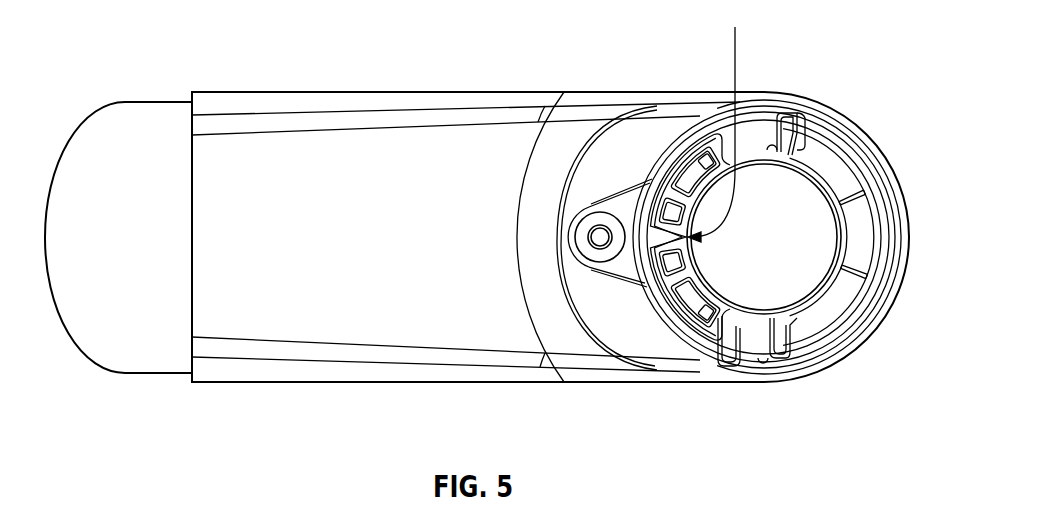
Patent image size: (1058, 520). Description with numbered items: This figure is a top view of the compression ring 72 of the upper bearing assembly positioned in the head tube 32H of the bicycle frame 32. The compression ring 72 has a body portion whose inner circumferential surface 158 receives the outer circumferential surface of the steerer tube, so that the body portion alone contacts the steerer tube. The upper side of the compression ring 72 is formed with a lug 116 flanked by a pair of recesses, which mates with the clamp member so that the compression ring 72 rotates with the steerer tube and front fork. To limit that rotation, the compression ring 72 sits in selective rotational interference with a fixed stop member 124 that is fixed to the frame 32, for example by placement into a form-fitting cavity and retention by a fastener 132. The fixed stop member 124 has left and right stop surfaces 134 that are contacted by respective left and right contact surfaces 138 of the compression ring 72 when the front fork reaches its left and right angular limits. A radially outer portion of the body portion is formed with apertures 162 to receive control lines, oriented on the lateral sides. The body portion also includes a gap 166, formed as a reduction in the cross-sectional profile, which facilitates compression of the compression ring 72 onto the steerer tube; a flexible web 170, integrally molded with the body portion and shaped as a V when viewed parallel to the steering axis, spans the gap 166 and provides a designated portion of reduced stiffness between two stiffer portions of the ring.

The frame 32 is at (277, 145).
The head tube 32H is at (833, 360).
The compression ring 72 is at (858, 157).
The lug 116 is at (852, 228).
The fixed stop member 124 is at (633, 185).
The fastener 132 is at (587, 210).
The stop surfaces 134 is at (660, 343).
The contact surfaces 138 is at (762, 118).
The inner circumferential surface 158 is at (797, 282).
The apertures 162 is at (817, 143).
The gap 166 is at (722, 121).
The flexible web 170 is at (652, 185).